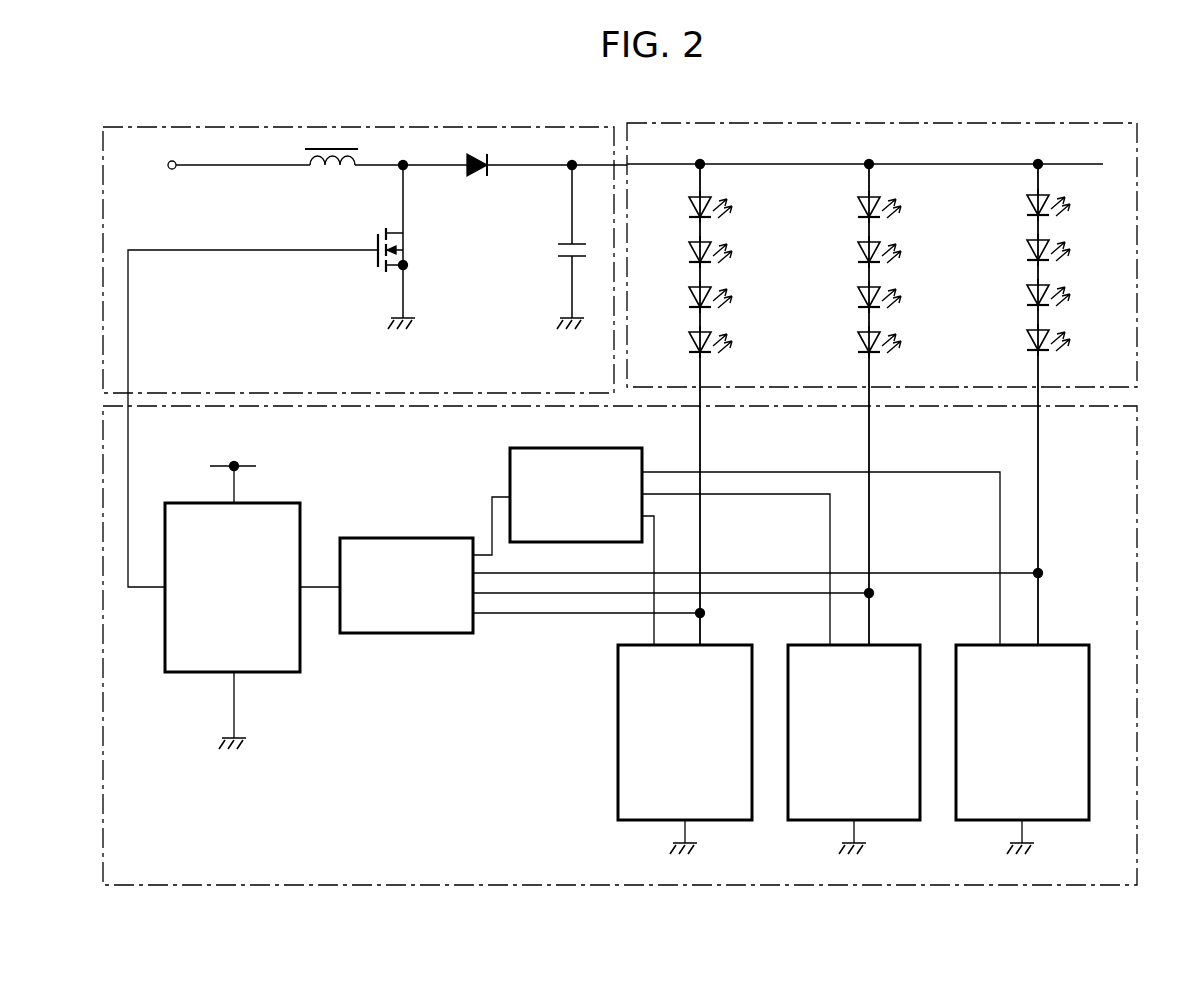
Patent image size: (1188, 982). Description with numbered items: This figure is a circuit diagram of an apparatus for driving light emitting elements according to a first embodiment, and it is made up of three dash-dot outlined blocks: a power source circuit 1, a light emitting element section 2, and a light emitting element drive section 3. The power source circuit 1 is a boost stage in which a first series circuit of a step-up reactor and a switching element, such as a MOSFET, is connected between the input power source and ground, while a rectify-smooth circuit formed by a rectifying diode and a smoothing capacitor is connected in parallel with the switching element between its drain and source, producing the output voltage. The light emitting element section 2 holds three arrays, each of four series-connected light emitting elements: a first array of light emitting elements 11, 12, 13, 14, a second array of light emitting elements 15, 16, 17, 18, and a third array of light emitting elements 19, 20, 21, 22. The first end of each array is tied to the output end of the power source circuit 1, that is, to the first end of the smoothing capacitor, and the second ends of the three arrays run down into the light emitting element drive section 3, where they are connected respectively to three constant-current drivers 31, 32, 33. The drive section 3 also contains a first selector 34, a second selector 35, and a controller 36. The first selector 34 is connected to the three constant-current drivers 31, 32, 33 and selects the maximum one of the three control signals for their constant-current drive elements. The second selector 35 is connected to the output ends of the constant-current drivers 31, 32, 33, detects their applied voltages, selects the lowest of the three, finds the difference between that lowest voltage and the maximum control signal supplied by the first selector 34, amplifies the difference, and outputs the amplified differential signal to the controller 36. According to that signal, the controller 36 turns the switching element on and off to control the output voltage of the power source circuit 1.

The power source circuit 1 is at (430, 127).
The light emitting element section 2 is at (882, 365).
The light emitting element drive section 3 is at (1137, 512).
The light emitting element 11 is at (690, 207).
The light emitting element 12 is at (690, 252).
The light emitting element 13 is at (690, 297).
The light emitting element 14 is at (690, 342).
The light emitting element 15 is at (859, 207).
The light emitting element 16 is at (859, 252).
The light emitting element 17 is at (859, 297).
The light emitting element 18 is at (859, 342).
The light emitting element 19 is at (1027, 205).
The light emitting element 20 is at (1027, 250).
The light emitting element 21 is at (1027, 295).
The light emitting element 22 is at (1027, 340).
The constant-current driver 31 is at (618, 730).
The constant-current driver 32 is at (880, 645).
The constant-current driver 33 is at (1052, 645).
The first selector 34 is at (565, 448).
The second selector 35 is at (362, 538).
The controller 36 is at (255, 503).